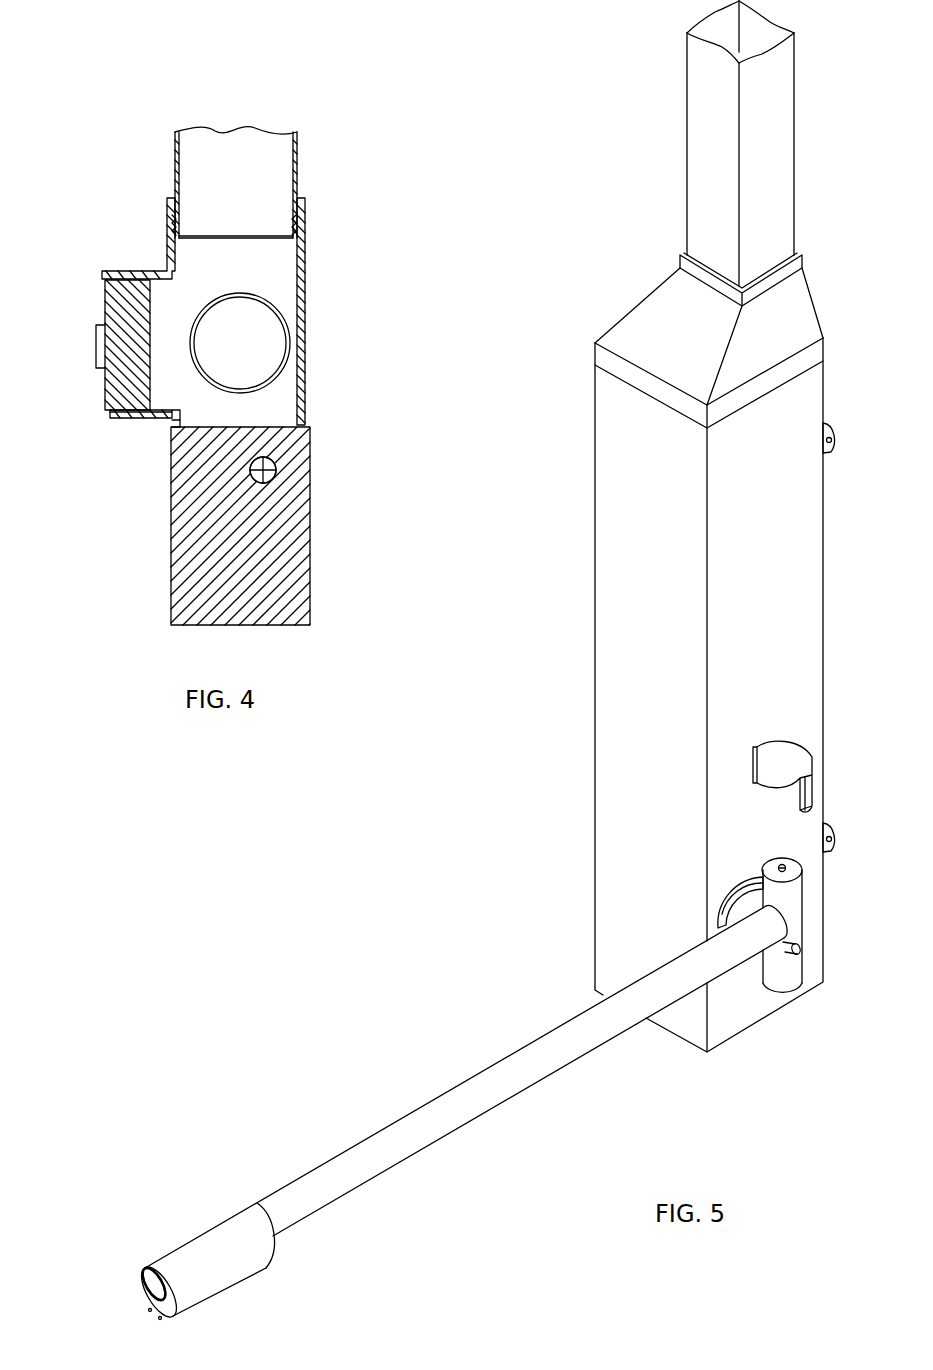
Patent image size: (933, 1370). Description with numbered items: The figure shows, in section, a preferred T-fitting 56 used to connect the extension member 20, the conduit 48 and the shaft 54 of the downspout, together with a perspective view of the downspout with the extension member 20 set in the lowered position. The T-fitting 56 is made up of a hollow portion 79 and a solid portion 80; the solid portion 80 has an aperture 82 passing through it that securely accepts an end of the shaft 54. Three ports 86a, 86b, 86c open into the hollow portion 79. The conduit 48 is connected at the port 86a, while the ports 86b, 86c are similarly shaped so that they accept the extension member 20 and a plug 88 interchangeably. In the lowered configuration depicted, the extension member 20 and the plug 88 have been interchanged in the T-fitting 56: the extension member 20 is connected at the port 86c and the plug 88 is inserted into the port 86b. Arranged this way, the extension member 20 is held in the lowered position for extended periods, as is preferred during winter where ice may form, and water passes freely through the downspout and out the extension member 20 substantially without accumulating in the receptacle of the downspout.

In FIG. 4, the extension member 20 is at (190, 155).
In FIG. 5, the extension member 20 is at (453, 1100).
In FIG. 4, the conduit 48 is at (283, 358).
In FIG. 4, the shaft 54 is at (272, 462).
In FIG. 4, the T-fitting 56 is at (160, 252).
In FIG. 5, the T-fitting 56 is at (800, 918).
In FIG. 4, the hollow portion 79 is at (168, 440).
In FIG. 4, the solid portion 80 is at (183, 553).
In FIG. 4, the aperture 82 is at (275, 482).
In FIG. 4, the port 86a is at (258, 312).
In FIG. 4, the port 86b is at (245, 236).
In FIG. 5, the port 86b is at (770, 862).
In FIG. 4, the port 86c is at (160, 393).
In FIG. 5, the port 86c is at (783, 953).
In FIG. 4, the plug 88 is at (107, 387).
In FIG. 5, the plug 88 is at (800, 866).